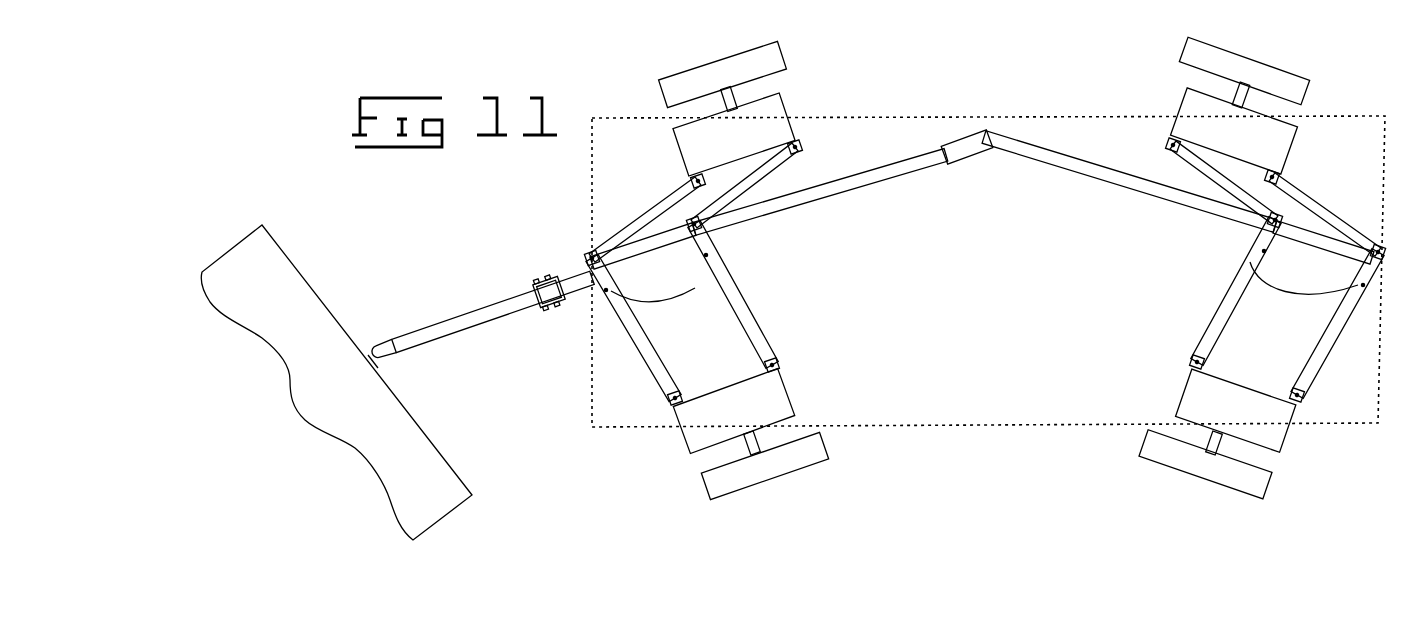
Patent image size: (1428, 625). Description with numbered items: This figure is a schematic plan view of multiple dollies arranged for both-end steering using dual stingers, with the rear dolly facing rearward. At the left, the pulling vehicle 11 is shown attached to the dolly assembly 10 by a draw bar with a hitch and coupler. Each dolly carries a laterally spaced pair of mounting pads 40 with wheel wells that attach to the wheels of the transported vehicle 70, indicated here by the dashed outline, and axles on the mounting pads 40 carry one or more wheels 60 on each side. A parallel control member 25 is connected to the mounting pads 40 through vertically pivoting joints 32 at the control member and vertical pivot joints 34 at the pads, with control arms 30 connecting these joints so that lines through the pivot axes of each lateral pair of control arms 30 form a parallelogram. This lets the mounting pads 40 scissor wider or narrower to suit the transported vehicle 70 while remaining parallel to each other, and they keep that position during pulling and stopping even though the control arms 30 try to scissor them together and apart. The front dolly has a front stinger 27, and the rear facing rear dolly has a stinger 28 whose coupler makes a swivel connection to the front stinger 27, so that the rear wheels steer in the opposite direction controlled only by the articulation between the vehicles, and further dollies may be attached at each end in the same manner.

The towed implement hitch assembly 10 is at (563, 225).
The pulling vehicle 11 is at (410, 417).
The parallel control member 25 is at (671, 253).
The front stinger 27 is at (963, 153).
The stinger 28 is at (1122, 188).
The control arm 30 is at (745, 328).
The vertically pivoting joint 32 is at (700, 228).
The vertical pivot joint 34 is at (600, 255).
The mounting pad 40 is at (778, 108).
The wheel 60 is at (786, 62).
The transported vehicle 70 is at (592, 382).